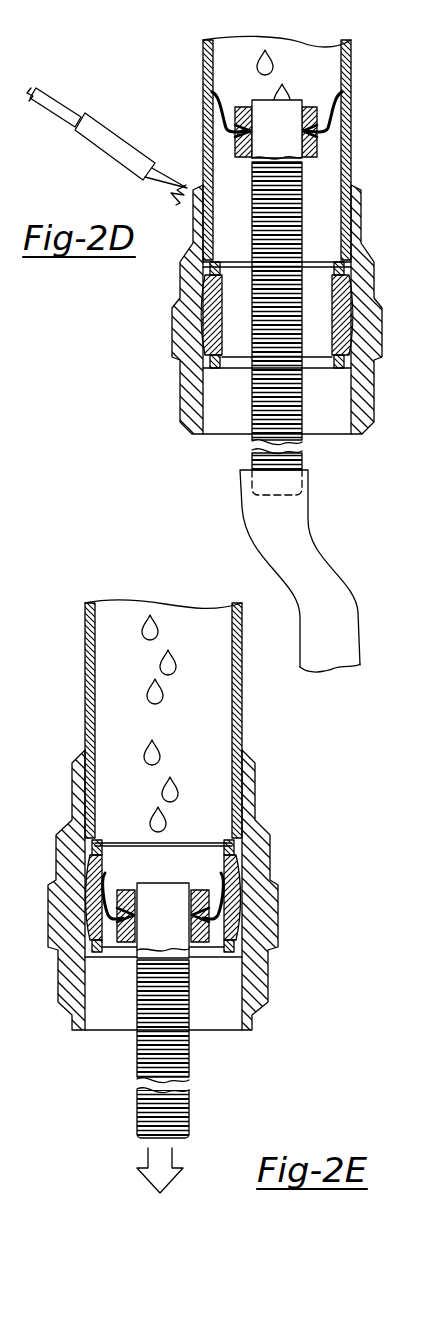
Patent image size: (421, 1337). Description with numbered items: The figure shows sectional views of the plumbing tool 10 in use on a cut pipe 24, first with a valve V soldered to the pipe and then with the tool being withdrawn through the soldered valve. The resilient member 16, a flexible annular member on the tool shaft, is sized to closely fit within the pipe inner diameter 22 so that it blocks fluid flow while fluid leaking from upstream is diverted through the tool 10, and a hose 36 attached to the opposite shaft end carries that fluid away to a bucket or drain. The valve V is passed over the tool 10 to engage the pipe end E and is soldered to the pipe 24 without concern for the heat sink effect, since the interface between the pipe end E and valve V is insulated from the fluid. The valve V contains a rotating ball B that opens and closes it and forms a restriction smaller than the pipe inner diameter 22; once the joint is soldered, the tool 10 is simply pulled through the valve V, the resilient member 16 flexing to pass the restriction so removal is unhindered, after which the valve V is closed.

In FIG. 2D, the tool 10 is at (309, 185).
In FIG. 2E, the tool 10 is at (212, 1105).
In FIG. 2E, the resilient member 16 is at (208, 881).
In FIG. 2D, the pipe inner diameter 22 is at (342, 61).
In FIG. 2D, the pipe 24 is at (350, 97).
In FIG. 2E, the pipe 24 is at (243, 705).
In FIG. 2D, the hose 36 is at (326, 566).
In FIG. 2D, the valve V is at (367, 302).
In FIG. 2E, the valve V is at (270, 888).
In FIG. 2D, the ball B is at (352, 308).
In FIG. 2E, the ball B is at (240, 926).
In FIG. 2D, the pipe end E is at (352, 265).